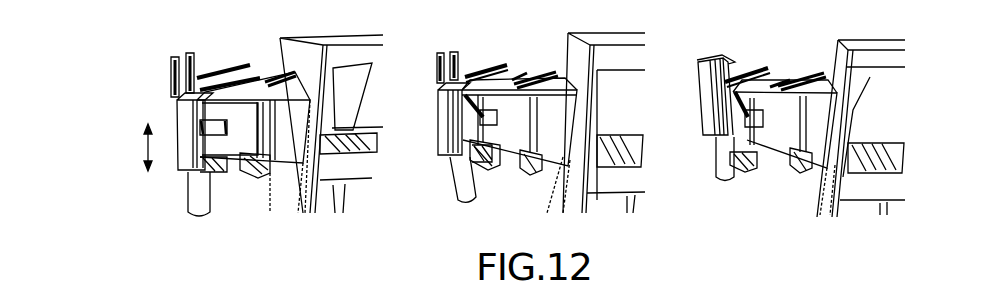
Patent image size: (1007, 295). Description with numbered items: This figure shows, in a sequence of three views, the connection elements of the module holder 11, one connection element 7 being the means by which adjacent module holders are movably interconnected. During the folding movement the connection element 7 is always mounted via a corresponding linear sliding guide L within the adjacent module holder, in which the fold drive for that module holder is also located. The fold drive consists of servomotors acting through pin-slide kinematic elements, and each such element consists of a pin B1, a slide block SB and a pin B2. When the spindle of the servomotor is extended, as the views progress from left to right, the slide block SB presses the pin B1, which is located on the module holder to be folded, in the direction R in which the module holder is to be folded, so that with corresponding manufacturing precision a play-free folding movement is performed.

The connection element 7 is at (247, 107).
The module holder 11 is at (323, 43).
The slide block SB is at (185, 125).
The pin B1 is at (193, 197).
The pin B2 is at (485, 65).
The linear sliding guide L is at (461, 88).
The direction R is at (140, 146).